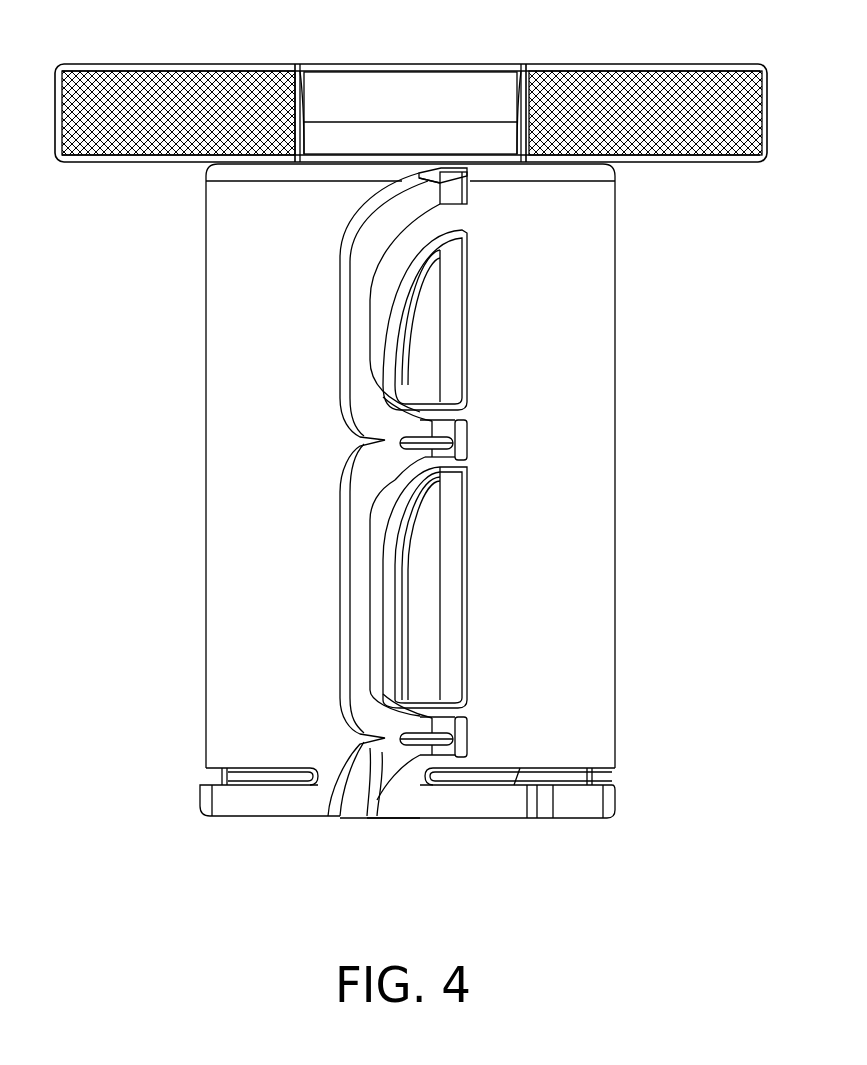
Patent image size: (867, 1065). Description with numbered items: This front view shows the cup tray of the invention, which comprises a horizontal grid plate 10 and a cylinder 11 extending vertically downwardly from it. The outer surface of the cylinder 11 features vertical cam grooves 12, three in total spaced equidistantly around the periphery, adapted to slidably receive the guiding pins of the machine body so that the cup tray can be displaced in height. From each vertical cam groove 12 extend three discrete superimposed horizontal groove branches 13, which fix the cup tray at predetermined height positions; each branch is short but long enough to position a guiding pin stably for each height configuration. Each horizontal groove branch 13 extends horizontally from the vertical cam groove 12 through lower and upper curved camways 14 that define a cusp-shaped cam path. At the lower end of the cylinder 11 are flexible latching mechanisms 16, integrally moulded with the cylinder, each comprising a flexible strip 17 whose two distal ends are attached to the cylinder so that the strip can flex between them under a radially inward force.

The horizontal grid plate 10 is at (124, 98).
The cylinder 11 is at (618, 513).
The vertical cam groove 12 is at (375, 330).
The horizontal groove branch 13 is at (470, 183).
The curved camway 14 is at (462, 287).
The flexible latching mechanism 16 is at (228, 824).
The flexible strip 17 is at (275, 800).